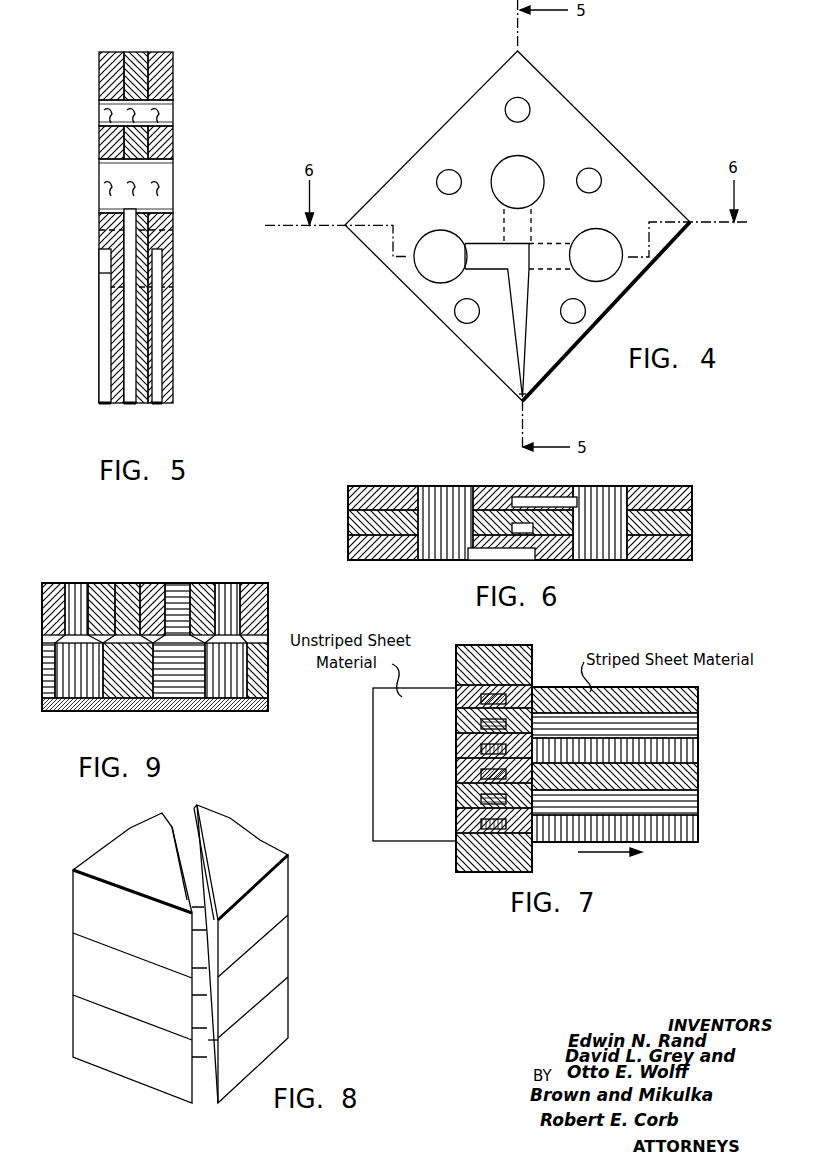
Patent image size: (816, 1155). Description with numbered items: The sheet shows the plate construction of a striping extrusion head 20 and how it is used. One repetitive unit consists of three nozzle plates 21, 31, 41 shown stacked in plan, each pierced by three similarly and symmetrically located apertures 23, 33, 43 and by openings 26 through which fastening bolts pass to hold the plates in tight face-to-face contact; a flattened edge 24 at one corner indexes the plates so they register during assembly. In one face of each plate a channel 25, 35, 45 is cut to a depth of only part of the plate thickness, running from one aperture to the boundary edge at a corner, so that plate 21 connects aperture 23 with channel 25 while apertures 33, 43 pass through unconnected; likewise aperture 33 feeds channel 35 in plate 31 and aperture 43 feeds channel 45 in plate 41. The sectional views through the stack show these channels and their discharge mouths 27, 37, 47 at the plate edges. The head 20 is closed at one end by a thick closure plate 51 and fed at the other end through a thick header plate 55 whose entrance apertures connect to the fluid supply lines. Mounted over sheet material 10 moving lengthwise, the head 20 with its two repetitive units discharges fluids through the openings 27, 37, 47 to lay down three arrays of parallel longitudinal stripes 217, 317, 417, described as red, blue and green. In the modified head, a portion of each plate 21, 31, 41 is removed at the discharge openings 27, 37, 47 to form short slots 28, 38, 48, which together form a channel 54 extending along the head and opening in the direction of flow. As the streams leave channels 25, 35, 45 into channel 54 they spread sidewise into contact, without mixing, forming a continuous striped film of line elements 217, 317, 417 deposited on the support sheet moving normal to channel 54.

In FIG. 7, the sheet material 10 is at (643, 734).
In FIG. 7, the extrusion head 20 is at (468, 645).
In FIG. 5, the nozzle plate 21 is at (110, 53).
In FIG. 4, the nozzle plate 21 is at (588, 121).
In FIG. 6, the nozzle plate 21 is at (692, 546).
In FIG. 7, the nozzle plate 21 is at (462, 740).
In FIG. 9, the nozzle plate 21 is at (96, 582).
In FIG. 8, the nozzle plate 21 is at (274, 890).
In FIG. 4, the aperture 23 is at (432, 236).
In FIG. 6, the aperture 23 is at (440, 500).
In FIG. 4, the flattened edge 24 is at (691, 224).
In FIG. 5, the channel 25 is at (105, 306).
In FIG. 4, the channel 25 is at (488, 242).
In FIG. 6, the channel 25 is at (497, 554).
In FIG. 9, the channel 25 is at (76, 582).
In FIG. 8, the channel 25 is at (181, 852).
In FIG. 5, the openings 26 is at (156, 111).
In FIG. 4, the openings 26 is at (514, 100).
In FIG. 5, the discharge mouth 27 is at (104, 404).
In FIG. 4, the discharge mouth 27 is at (528, 399).
In FIG. 7, the discharge mouth 27 is at (484, 749).
In FIG. 8, the slot 28 is at (214, 895).
In FIG. 5, the nozzle plate 31 is at (132, 53).
In FIG. 6, the nozzle plate 31 is at (692, 521).
In FIG. 7, the nozzle plate 31 is at (462, 714).
In FIG. 9, the nozzle plate 31 is at (147, 582).
In FIG. 8, the nozzle plate 31 is at (276, 950).
In FIG. 5, the aperture 33 is at (157, 184).
In FIG. 4, the aperture 33 is at (522, 160).
In FIG. 5, the channel 35 is at (130, 300).
In FIG. 4, the channel 35 is at (531, 222).
In FIG. 6, the channel 35 is at (515, 525).
In FIG. 9, the channel 35 is at (127, 582).
In FIG. 8, the channel 35 is at (194, 960).
In FIG. 5, the discharge mouth 37 is at (130, 404).
In FIG. 7, the discharge mouth 37 is at (484, 724).
In FIG. 8, the slot 38 is at (216, 988).
In FIG. 5, the nozzle plate 41 is at (158, 53).
In FIG. 6, the nozzle plate 41 is at (692, 496).
In FIG. 7, the nozzle plate 41 is at (462, 690).
In FIG. 9, the nozzle plate 41 is at (202, 582).
In FIG. 8, the nozzle plate 41 is at (280, 1010).
In FIG. 4, the aperture 43 is at (612, 272).
In FIG. 6, the aperture 43 is at (612, 530).
In FIG. 5, the channel 45 is at (156, 340).
In FIG. 4, the channel 45 is at (576, 238).
In FIG. 6, the channel 45 is at (560, 502).
In FIG. 9, the channel 45 is at (177, 582).
In FIG. 8, the channel 45 is at (194, 1015).
In FIG. 5, the discharge mouth 47 is at (157, 404).
In FIG. 7, the discharge mouth 47 is at (484, 699).
In FIG. 8, the slot 48 is at (216, 1056).
In FIG. 7, the closure plate 51 is at (466, 857).
In FIG. 8, the channel 54 is at (191, 914).
In FIG. 7, the header plate 55 is at (522, 652).
In FIG. 7, the line elements 217 is at (698, 750).
In FIG. 9, the line elements 217 is at (73, 694).
In FIG. 7, the line elements 317 is at (698, 724).
In FIG. 9, the line elements 317 is at (180, 694).
In FIG. 7, the line elements 417 is at (698, 700).
In FIG. 9, the line elements 417 is at (125, 694).